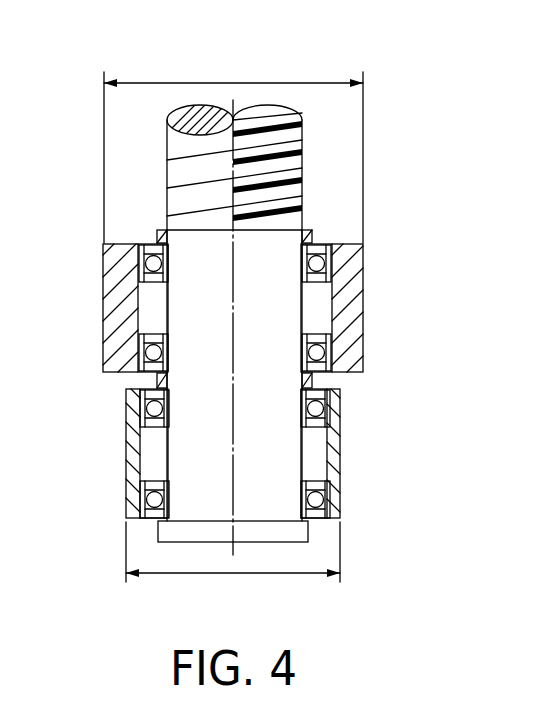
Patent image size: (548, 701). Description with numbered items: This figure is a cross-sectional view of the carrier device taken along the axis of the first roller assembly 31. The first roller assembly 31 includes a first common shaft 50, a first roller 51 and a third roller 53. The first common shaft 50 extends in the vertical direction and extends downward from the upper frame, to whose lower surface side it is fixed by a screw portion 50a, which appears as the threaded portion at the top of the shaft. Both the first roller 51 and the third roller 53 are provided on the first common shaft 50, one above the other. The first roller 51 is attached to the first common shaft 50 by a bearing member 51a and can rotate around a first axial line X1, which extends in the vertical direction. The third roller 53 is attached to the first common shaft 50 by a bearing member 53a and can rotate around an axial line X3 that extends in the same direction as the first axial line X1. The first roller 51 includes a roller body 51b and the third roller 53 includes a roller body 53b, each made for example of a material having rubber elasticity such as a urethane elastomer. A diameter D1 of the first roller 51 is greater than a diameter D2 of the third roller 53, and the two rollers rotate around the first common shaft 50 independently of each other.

The first roller assembly 31 is at (426, 126).
The first common shaft 50 is at (280, 321).
The screw portion 50a is at (303, 190).
The first roller 51 is at (365, 267).
The bearing member 51a is at (313, 240).
The roller body 51b is at (115, 308).
The third roller 53 is at (340, 480).
The bearing member 53a is at (307, 432).
The roller body 53b is at (132, 470).
The first axial line X1 is at (231, 308).
The axial line X3 is at (231, 452).
The diameter of the first roller D1 is at (236, 80).
The diameter of the third roller D2 is at (233, 577).